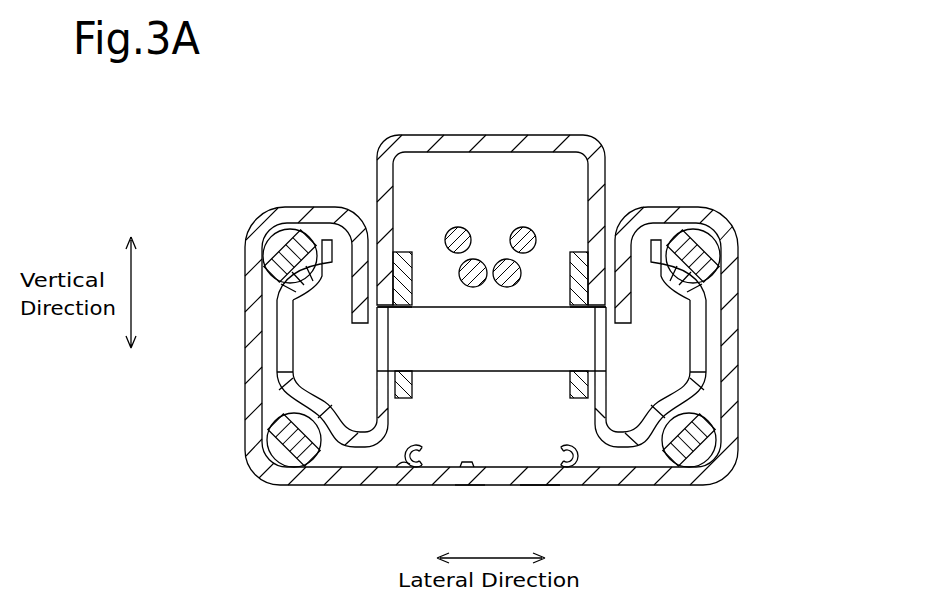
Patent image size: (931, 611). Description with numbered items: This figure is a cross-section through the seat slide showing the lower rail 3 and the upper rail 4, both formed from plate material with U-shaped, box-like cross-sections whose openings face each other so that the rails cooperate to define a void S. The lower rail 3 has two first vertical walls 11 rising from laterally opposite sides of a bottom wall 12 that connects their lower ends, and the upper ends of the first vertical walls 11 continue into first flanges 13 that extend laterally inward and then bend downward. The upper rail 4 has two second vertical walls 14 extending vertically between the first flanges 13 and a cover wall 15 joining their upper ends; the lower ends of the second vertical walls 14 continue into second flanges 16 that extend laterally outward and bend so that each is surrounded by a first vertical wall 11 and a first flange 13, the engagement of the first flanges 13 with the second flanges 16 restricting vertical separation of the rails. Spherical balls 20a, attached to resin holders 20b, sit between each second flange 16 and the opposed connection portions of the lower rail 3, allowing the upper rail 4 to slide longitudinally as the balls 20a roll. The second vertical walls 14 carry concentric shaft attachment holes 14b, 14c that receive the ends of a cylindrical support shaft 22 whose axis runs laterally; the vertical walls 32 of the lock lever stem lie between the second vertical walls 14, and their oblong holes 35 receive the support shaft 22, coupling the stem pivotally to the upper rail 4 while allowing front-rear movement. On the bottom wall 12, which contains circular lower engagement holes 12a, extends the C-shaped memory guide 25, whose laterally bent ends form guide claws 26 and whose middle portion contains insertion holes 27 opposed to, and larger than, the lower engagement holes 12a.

The lower rail 3 is at (549, 492).
The upper rail 4 is at (503, 126).
The first vertical wall 11 is at (245, 336).
The bottom wall 12 is at (620, 483).
The lower engagement hole 12a is at (465, 478).
The first flange 13 is at (317, 207).
The second vertical wall 14 is at (378, 176).
The shaft attachment hole 14b is at (592, 323).
The shaft attachment hole 14c is at (377, 325).
The cover wall 15 is at (541, 135).
The second flange 16 is at (280, 297).
The spherical ball 20a is at (258, 246).
The resin holder 20b is at (262, 272).
The support shaft 22 is at (534, 371).
The memory guide 25 is at (400, 473).
The guide claw 26 is at (424, 468).
The insertion hole 27 is at (467, 463).
The vertical wall 32 is at (403, 252).
The oblong hole 35 is at (400, 309).
The void S is at (493, 405).